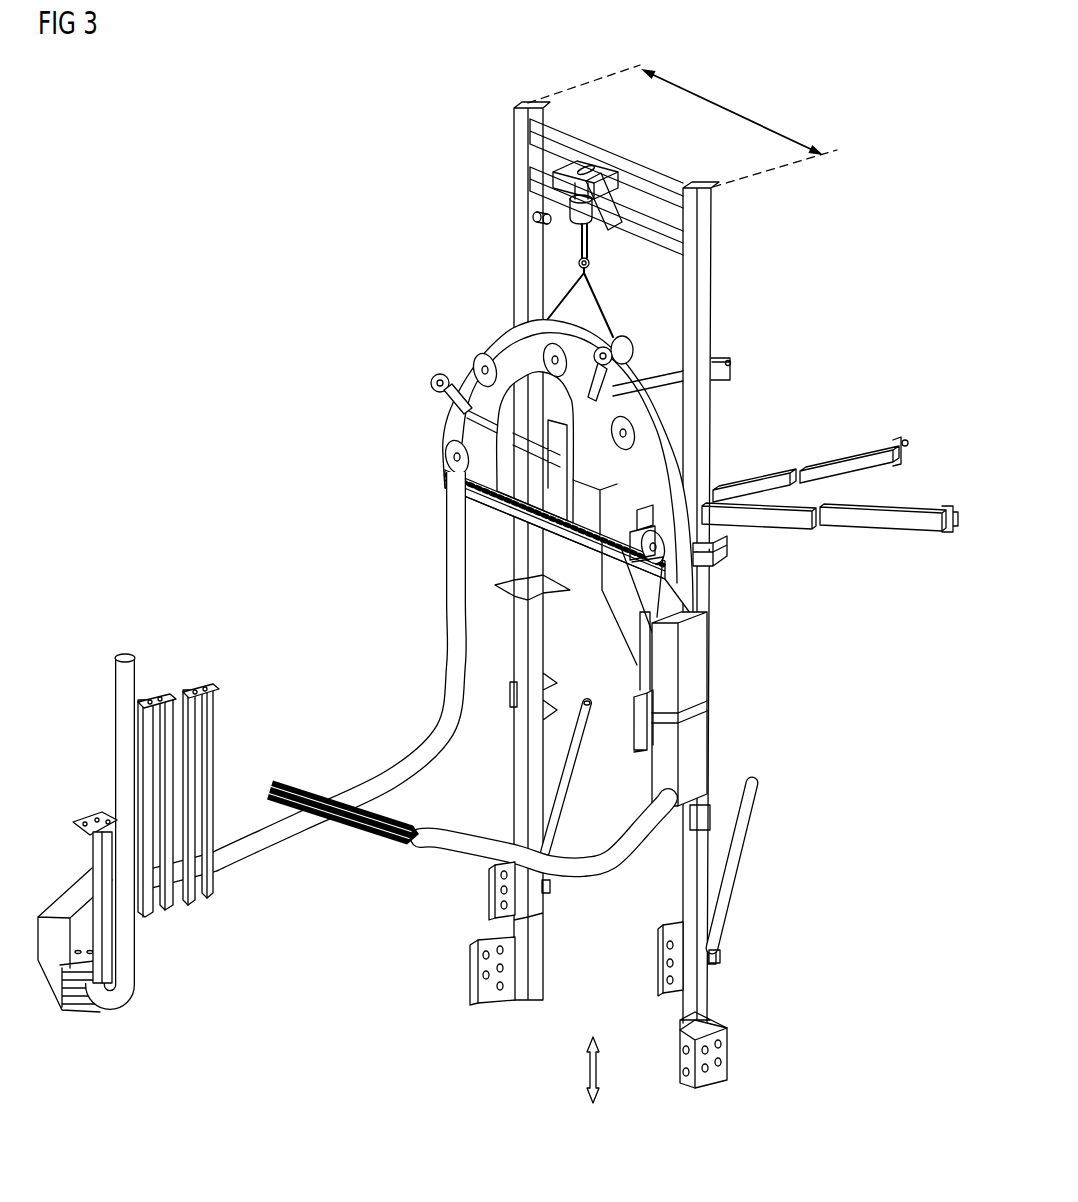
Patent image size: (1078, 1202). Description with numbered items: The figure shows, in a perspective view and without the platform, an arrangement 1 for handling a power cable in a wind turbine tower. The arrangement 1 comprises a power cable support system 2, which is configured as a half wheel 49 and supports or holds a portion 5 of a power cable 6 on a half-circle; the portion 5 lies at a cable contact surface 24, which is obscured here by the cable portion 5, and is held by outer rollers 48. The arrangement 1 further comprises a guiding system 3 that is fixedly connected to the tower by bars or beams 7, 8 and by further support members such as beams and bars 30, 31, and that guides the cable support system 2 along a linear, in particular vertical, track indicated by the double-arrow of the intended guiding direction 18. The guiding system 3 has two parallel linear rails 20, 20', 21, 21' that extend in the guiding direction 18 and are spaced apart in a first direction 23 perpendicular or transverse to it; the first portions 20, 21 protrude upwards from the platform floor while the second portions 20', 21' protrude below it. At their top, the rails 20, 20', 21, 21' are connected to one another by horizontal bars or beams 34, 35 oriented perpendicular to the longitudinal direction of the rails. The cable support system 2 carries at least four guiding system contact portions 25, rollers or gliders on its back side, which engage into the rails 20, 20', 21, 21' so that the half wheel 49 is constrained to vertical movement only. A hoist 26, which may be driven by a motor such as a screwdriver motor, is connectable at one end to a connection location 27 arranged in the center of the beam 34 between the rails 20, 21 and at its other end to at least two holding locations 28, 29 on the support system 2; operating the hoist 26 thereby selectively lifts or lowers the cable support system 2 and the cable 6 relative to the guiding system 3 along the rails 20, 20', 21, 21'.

The arrangement for handling a power cable 1 is at (248, 155).
The power cable support system 2 is at (397, 353).
The guiding system 3 is at (772, 375).
The portion of the power cable 5 is at (499, 318).
The power cable 6 is at (445, 642).
The bar or beam 7 is at (855, 459).
The bar or beam 8 is at (881, 530).
The intended guiding direction 18 is at (585, 1068).
The rail (first portion) 20 is at (510, 551).
The rail (second portion) 20' is at (539, 933).
The rail (first portion) 21 is at (730, 602).
The rail (second portion) 21' is at (720, 1005).
The first direction 23 is at (737, 108).
The cable contact surface 24 is at (480, 348).
The guiding system contact portion 25 is at (730, 583).
The hoist 26 is at (581, 222).
The connection location 27 is at (500, 196).
The holding location 28 is at (553, 312).
The holding location 29 is at (640, 392).
The beam or bar 30 is at (568, 789).
The beam or bar 31 is at (744, 856).
The horizontal bar or beam 34 is at (597, 153).
The horizontal bar or beam 35 is at (640, 215).
The outer roller 48 is at (431, 386).
The half wheel 49 is at (443, 437).